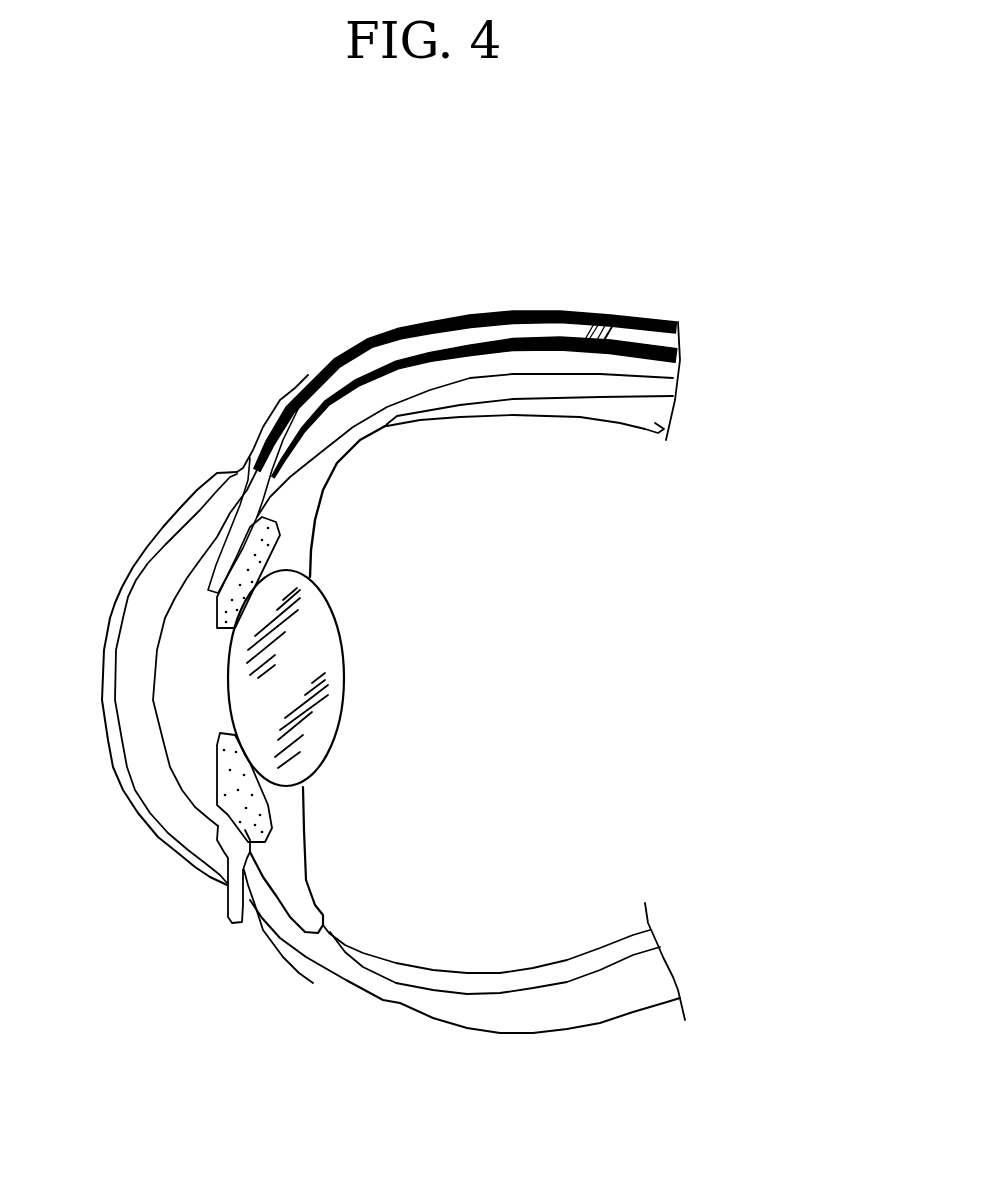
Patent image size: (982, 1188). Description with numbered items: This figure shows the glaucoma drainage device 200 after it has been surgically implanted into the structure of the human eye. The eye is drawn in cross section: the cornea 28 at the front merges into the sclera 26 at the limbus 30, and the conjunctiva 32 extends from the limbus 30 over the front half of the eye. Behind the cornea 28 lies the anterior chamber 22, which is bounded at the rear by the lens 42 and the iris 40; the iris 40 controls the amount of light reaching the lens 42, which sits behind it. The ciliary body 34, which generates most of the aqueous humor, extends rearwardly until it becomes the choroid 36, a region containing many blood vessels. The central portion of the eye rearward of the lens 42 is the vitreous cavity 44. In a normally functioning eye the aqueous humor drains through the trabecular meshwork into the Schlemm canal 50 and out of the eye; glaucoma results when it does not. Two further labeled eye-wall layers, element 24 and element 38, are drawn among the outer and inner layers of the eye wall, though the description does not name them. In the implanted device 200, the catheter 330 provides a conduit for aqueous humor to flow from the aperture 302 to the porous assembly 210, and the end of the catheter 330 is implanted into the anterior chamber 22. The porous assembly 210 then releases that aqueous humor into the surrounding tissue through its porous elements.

The anterior chamber 22 is at (165, 650).
The sclera 24 is at (657, 327).
The sclera 26 is at (665, 380).
The cornea 28 is at (153, 785).
The limbus 30 is at (238, 454).
The conjunctiva 32 is at (280, 406).
The ciliary body 34 is at (303, 510).
The choroid 36 is at (600, 397).
The vitreous membrane 38 is at (533, 416).
The iris 40 is at (268, 812).
The lens 42 is at (343, 682).
The vitreous cavity 44 is at (520, 709).
The Schlemm canal 50 is at (228, 885).
The glaucoma drainage device 200 is at (493, 306).
The porous assembly 210 is at (598, 326).
The aperture 302 is at (205, 585).
The catheter 330 is at (380, 340).